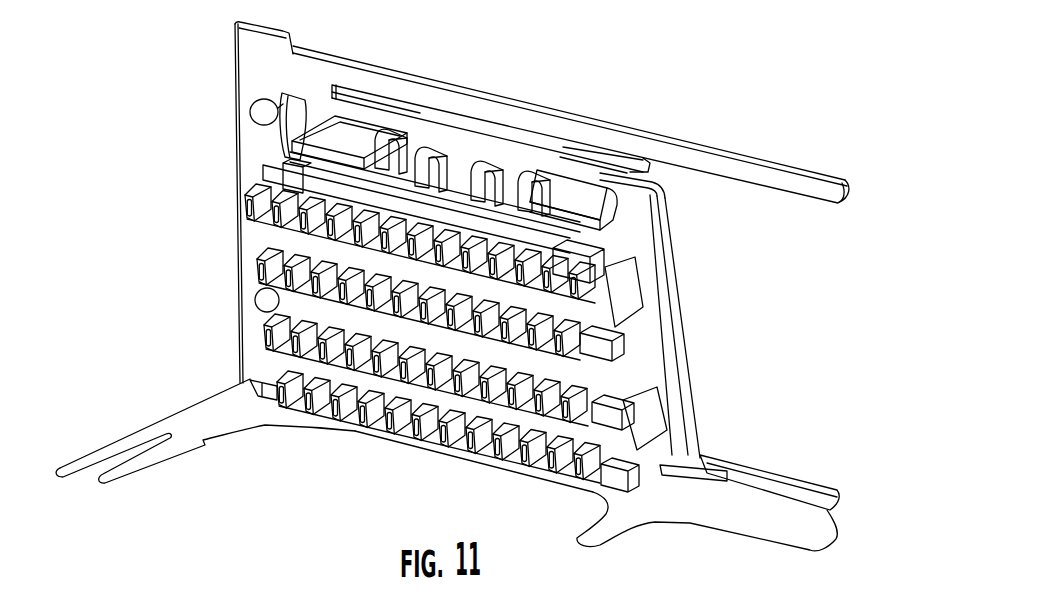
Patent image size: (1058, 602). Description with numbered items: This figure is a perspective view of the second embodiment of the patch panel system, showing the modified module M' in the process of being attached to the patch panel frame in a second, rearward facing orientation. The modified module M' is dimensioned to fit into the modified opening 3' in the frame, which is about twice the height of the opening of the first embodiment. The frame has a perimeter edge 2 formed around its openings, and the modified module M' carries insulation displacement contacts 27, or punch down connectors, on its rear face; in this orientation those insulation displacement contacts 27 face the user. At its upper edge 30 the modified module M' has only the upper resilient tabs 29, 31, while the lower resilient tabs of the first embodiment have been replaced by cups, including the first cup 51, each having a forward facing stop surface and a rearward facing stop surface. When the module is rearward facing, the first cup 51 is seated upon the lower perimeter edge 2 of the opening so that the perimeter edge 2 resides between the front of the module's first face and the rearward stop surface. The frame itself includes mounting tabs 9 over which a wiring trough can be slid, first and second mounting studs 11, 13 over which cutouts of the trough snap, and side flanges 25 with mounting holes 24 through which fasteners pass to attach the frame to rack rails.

The perimeter edge 2 is at (738, 177).
The mounting tabs 9 is at (213, 424).
The first mounting stud 11 is at (814, 469).
The second mounting stud 13 is at (250, 385).
The mounting holes 24 is at (258, 112).
The side flanges 25 is at (245, 63).
The insulation displacement contacts 27 is at (498, 460).
The upper resilient tab 29 is at (608, 141).
The upper edge 30 is at (470, 133).
The upper resilient tab 31 is at (383, 81).
The first cup 51 is at (667, 490).
The modified module M' is at (729, 327).
The modified opening 3' is at (560, 414).